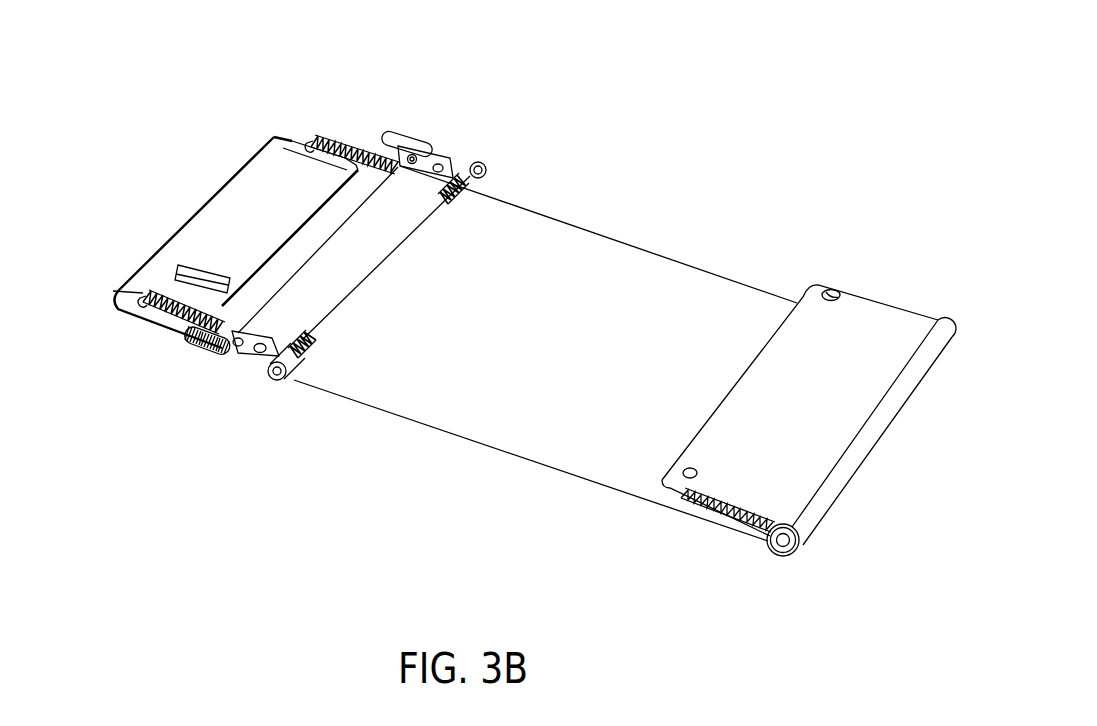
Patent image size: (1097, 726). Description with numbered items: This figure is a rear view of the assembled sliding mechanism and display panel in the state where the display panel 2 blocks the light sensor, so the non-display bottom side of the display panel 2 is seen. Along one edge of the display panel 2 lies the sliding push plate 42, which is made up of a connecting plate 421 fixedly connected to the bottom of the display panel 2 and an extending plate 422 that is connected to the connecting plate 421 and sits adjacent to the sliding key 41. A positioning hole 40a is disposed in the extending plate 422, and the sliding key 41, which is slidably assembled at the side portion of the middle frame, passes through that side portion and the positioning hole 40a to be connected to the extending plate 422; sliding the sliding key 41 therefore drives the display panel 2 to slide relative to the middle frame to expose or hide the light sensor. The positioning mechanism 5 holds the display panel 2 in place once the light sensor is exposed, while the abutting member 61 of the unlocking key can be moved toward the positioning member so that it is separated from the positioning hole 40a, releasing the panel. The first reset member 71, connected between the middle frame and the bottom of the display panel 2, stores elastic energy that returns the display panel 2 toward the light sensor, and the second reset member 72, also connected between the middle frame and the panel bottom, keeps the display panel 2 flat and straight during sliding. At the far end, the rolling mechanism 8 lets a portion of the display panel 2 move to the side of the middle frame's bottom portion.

The display panel 2 is at (625, 277).
The positioning mechanism 5 is at (300, 357).
The rolling mechanism 8 is at (777, 552).
The positioning hole 40a is at (437, 165).
The sliding key 41 is at (413, 140).
The sliding push plate 42 is at (247, 348).
The connecting plate 421 is at (347, 258).
The extending plate 422 is at (450, 170).
The abutting member 61 is at (486, 168).
The first reset member 71 is at (345, 142).
The second reset member 72 is at (830, 288).